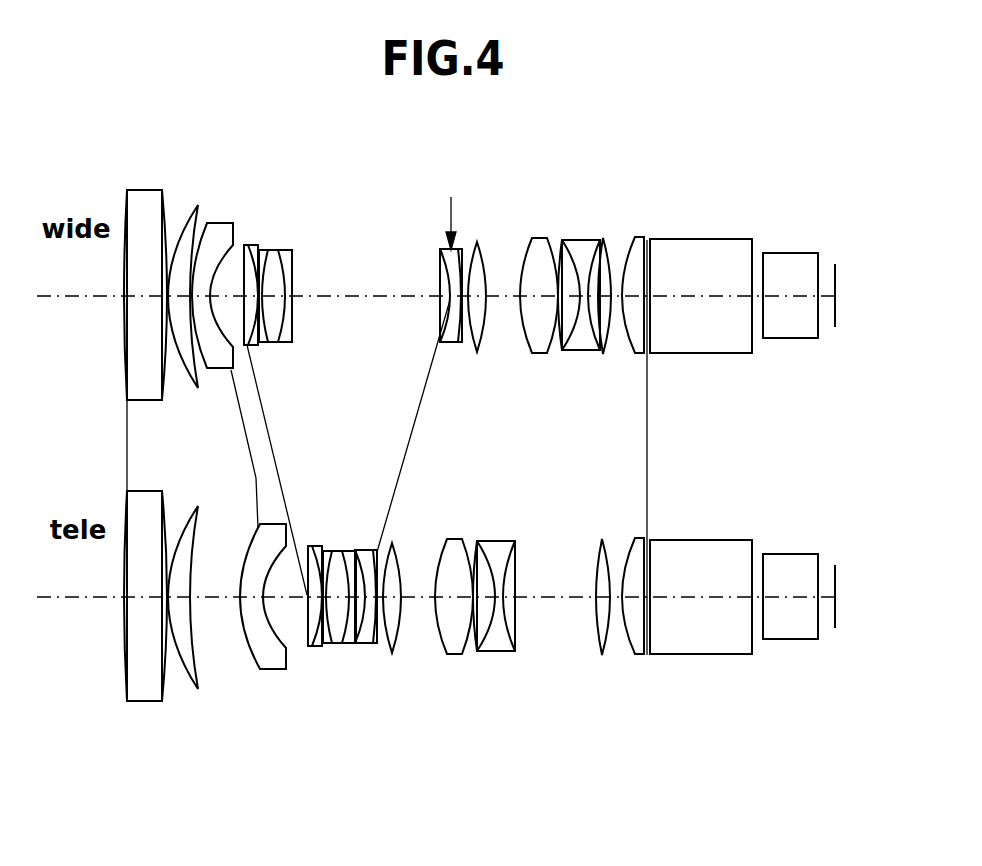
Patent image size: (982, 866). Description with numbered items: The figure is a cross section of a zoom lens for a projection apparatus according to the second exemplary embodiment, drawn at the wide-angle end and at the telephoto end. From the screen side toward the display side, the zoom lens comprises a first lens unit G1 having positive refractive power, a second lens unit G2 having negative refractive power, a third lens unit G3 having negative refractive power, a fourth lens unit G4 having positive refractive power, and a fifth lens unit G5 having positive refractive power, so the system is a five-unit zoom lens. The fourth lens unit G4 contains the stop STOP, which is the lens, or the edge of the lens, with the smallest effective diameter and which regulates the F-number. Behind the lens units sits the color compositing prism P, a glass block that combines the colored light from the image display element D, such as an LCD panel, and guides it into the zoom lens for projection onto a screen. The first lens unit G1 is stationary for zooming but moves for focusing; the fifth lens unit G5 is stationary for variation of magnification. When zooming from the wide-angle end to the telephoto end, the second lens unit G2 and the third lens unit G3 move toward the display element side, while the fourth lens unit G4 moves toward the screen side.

The first lens unit G1 is at (118, 712).
The second lens unit G2 is at (299, 682).
The third lens unit G3 is at (358, 682).
The fourth lens unit G4 is at (360, 682).
The fifth lens unit G5 is at (590, 682).
The stop STOP is at (449, 211).
The color compositing prism P is at (822, 682).
The image display element D is at (824, 682).